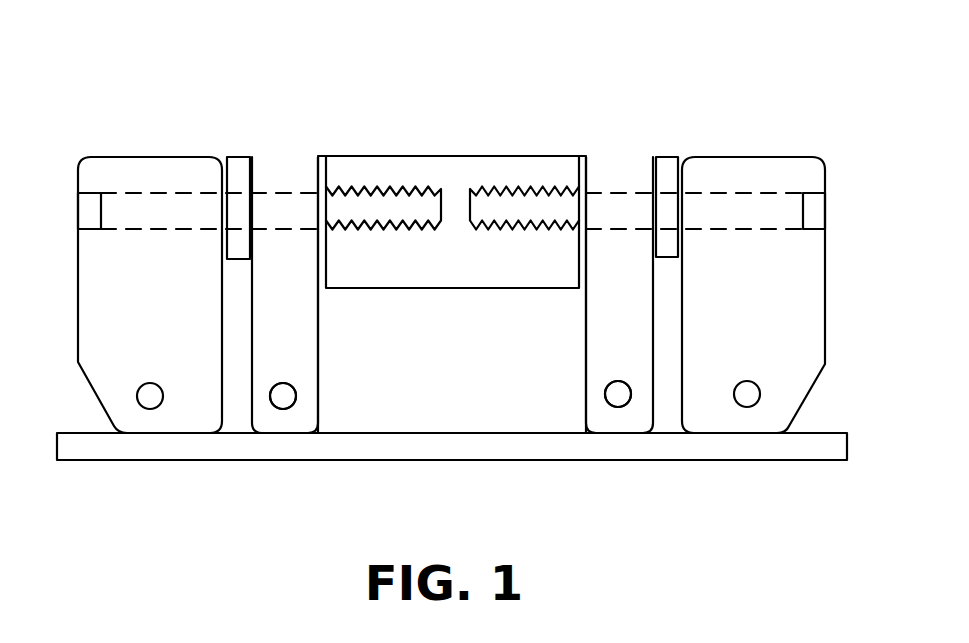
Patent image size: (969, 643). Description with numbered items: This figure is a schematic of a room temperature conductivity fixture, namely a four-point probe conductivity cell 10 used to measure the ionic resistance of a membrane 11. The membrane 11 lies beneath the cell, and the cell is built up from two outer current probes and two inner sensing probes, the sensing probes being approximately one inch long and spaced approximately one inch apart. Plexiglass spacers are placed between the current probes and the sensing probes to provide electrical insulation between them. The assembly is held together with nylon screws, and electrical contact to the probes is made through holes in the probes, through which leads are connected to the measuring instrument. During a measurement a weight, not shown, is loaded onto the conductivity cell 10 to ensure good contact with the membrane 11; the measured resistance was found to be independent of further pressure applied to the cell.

The conductivity cell 10 is at (166, 93).
The membrane 11 is at (460, 465).